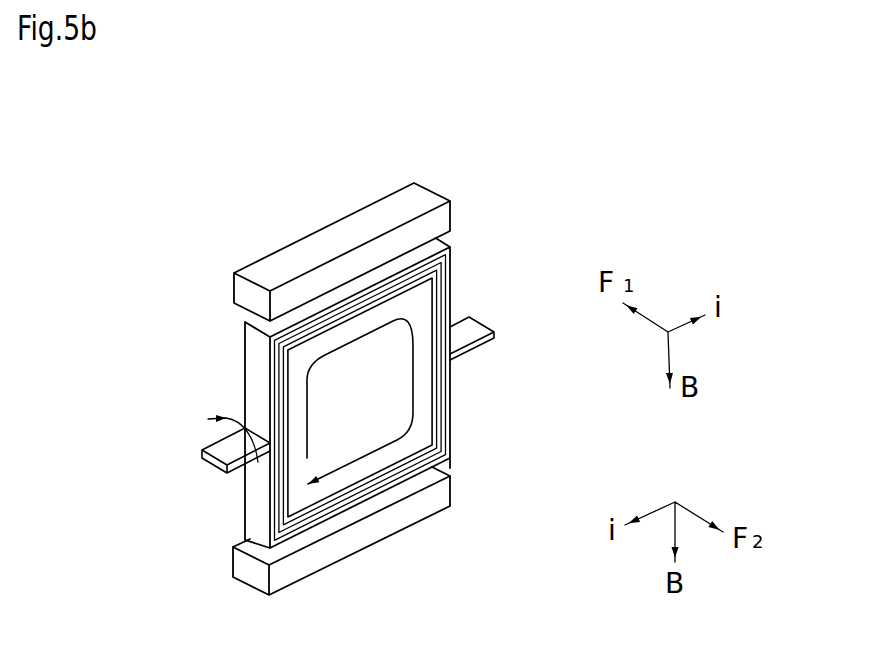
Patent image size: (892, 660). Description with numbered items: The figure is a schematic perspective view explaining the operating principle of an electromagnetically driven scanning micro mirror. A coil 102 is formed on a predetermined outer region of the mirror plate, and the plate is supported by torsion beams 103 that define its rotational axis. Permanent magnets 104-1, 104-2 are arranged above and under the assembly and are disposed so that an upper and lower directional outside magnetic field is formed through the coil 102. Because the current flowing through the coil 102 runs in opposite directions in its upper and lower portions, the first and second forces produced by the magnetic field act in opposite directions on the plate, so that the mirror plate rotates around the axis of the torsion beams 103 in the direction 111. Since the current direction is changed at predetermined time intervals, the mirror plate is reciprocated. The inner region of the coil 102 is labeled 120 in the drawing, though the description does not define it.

The coil 102 is at (419, 292).
The torsion beams 103 is at (223, 445).
The permanent magnet 104-1 is at (307, 283).
The permanent magnet 104-2 is at (410, 512).
The direction 111 is at (220, 418).
The current path in coil 120 is at (347, 467).